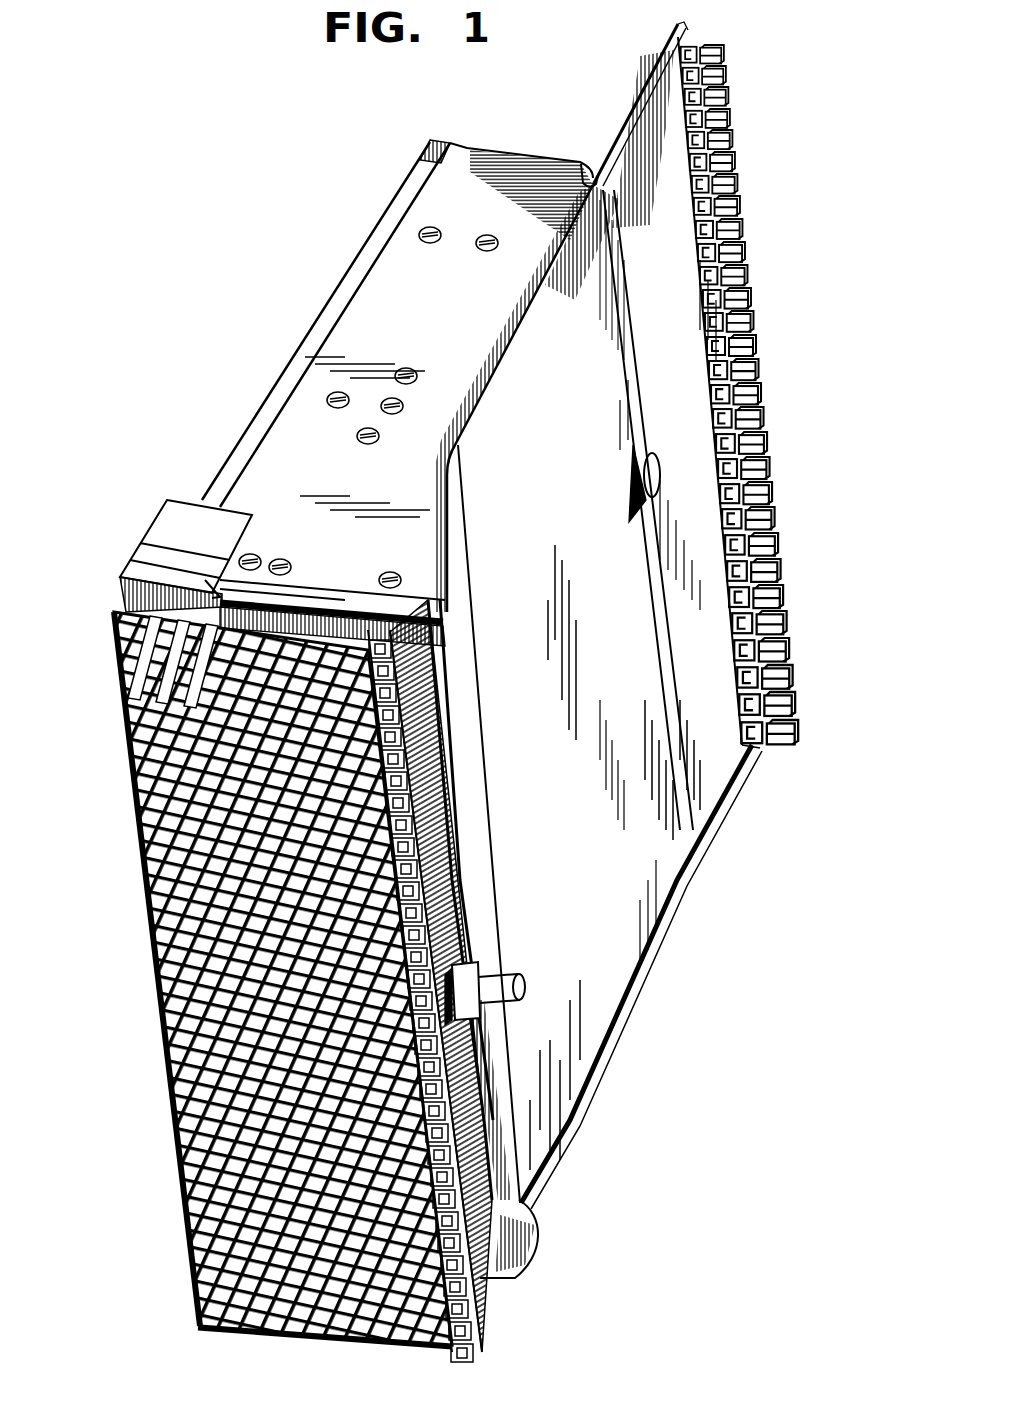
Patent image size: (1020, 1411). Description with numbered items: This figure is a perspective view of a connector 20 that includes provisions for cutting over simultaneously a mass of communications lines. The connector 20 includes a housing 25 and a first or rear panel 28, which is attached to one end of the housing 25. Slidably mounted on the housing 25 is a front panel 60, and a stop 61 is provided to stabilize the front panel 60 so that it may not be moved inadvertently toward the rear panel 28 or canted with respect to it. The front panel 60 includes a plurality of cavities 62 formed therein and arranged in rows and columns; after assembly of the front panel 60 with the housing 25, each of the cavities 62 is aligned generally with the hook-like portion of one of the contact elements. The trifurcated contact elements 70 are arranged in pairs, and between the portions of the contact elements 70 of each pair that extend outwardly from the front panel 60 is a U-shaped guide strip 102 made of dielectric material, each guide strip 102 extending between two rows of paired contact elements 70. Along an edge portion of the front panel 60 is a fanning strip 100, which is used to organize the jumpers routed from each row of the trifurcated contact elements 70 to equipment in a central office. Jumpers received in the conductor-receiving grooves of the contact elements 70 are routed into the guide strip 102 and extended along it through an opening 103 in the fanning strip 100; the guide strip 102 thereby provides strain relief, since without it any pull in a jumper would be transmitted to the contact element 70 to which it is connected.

The connector 20 is at (693, 1084).
The housing 25 is at (357, 314).
The rear panel 28 is at (453, 860).
The front panel 60 is at (127, 593).
The stop 61 is at (508, 981).
The cavities 62 is at (342, 592).
The trifurcated contact elements 70 is at (120, 637).
The fanning strip 100 is at (437, 783).
The guide strip 102 is at (140, 662).
The opening 103 is at (427, 728).